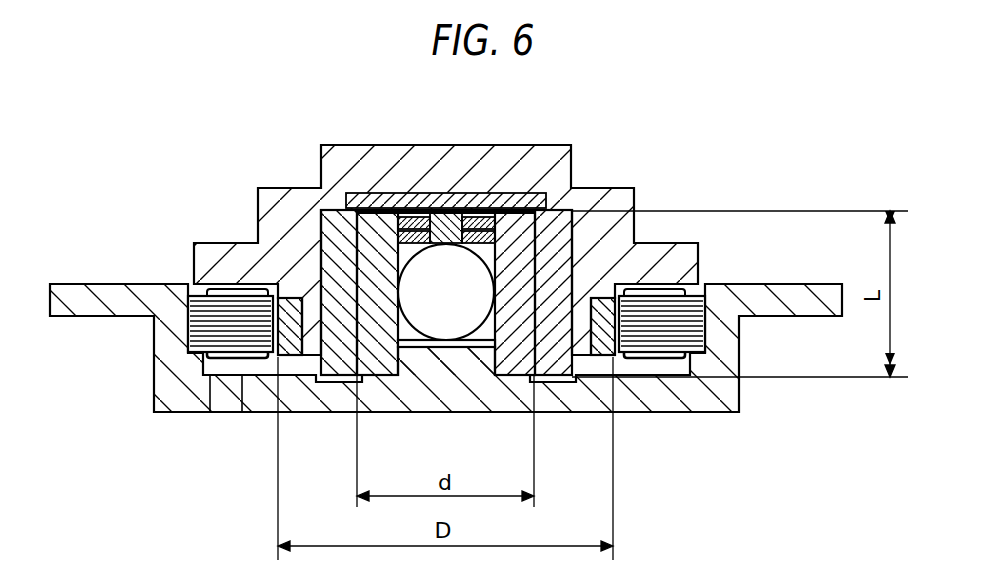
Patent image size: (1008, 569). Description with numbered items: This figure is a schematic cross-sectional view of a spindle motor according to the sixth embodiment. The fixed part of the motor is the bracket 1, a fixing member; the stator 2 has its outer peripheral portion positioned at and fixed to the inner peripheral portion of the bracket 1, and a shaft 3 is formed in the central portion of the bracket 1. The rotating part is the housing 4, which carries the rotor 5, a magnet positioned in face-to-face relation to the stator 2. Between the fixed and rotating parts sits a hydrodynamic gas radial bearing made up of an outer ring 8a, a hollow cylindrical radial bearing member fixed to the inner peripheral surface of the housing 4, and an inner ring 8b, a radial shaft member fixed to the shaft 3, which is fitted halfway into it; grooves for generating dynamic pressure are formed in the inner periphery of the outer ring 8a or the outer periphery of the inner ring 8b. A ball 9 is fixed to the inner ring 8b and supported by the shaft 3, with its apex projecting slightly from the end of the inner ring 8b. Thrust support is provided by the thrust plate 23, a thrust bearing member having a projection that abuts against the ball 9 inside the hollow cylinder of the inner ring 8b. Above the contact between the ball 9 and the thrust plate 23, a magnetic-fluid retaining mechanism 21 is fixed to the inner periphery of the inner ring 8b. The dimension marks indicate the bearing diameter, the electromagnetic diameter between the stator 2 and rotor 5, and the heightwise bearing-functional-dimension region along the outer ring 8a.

The bracket 1 is at (788, 309).
The stator 2 is at (220, 338).
The shaft 3 is at (425, 360).
The housing 4 is at (515, 158).
The rotor 5 is at (296, 340).
The outer ring 8a is at (343, 360).
The inner ring 8b is at (382, 360).
The ball 9 is at (416, 300).
The magnetic-fluid retaining mechanism 21 is at (464, 212).
The thrust plate 23 is at (408, 201).